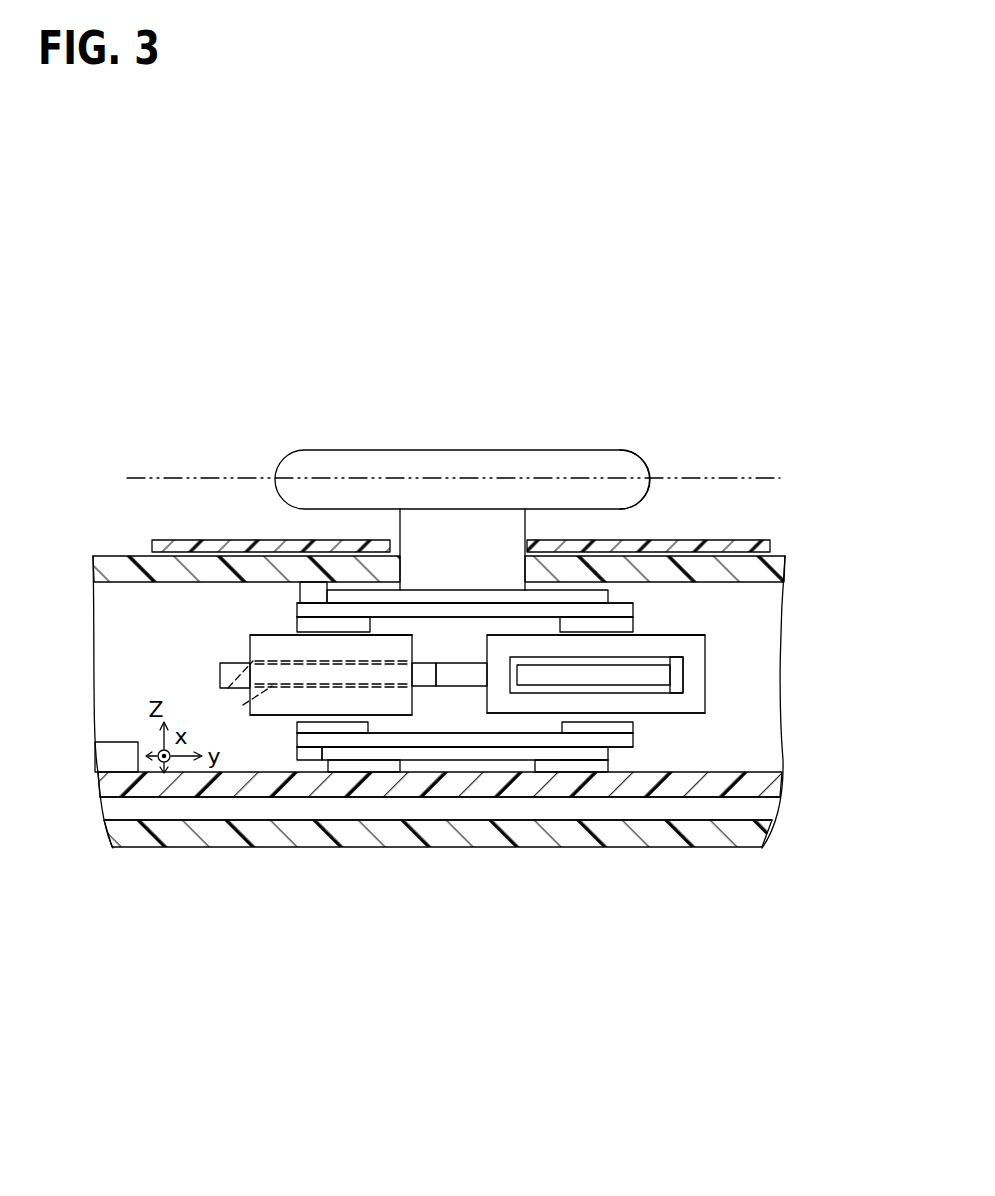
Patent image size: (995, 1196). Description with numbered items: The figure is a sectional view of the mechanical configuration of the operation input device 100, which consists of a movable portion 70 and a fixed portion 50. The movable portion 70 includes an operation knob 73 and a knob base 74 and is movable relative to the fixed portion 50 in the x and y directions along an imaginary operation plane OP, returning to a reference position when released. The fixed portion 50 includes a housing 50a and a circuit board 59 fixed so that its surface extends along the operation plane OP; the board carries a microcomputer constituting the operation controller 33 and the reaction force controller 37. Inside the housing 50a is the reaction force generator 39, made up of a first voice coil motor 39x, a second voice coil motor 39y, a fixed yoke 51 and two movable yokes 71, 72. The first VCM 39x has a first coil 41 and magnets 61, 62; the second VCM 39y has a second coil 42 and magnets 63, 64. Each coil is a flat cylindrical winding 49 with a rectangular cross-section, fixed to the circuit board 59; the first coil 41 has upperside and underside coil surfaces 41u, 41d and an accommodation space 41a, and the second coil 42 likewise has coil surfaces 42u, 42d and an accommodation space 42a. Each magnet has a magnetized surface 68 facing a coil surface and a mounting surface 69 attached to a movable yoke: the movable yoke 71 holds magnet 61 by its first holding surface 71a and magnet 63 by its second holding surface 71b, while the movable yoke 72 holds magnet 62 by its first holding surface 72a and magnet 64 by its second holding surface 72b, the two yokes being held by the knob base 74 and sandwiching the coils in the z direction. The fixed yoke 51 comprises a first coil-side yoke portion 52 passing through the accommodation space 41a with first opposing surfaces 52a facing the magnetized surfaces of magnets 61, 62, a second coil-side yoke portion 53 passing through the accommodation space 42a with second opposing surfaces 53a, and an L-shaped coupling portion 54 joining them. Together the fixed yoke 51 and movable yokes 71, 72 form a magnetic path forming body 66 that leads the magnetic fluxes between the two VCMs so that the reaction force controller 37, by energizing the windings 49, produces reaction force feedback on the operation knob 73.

The operation input device 100 is at (651, 440).
The operation plane OP is at (172, 477).
The movable portion 70 is at (457, 448).
The operation knob 73 is at (652, 462).
The magnet 61 is at (600, 660).
The knob base 74 is at (505, 588).
The magnet 63 is at (332, 598).
The magnet 64 is at (340, 712).
The movable yoke 71 is at (297, 603).
The first holding surface 71a is at (647, 597).
The second holding surface 71b is at (296, 618).
The movable yoke 72 is at (432, 748).
The first holding surface 72a is at (637, 736).
The second holding surface 72b is at (300, 749).
The magnetic path forming body 66 is at (440, 662).
The mounting surface 69 is at (320, 620).
The magnetized surface 68 is at (405, 734).
The reaction force generator 39 is at (719, 610).
The first voice coil motor 39x is at (690, 540).
The second voice coil motor 39y is at (240, 790).
The fixed portion 50 is at (150, 812).
The housing 50a is at (762, 850).
The circuit board 59 is at (120, 850).
The second coil 42 is at (250, 648).
The coil surface 42u is at (277, 634).
The coil surface 42d is at (252, 724).
The accommodation space 42a is at (378, 672).
The winding 49 is at (440, 674).
The first coil 41 is at (705, 658).
The coil surface 41u is at (705, 636).
The coil surface 41d is at (690, 714).
The accommodation space 41a is at (613, 634).
The first coil-side yoke portion 52 is at (666, 678).
The first opposing surface 52a is at (683, 675).
The second coil-side yoke portion 53 is at (455, 688).
The second opposing surface 53a is at (247, 706).
The coupling portion 54 is at (460, 662).
The fixed yoke 51 is at (220, 677).
The magnet 62 is at (603, 748).
The operation controller 33 is at (78, 747).
The reaction force controller 37 is at (133, 740).